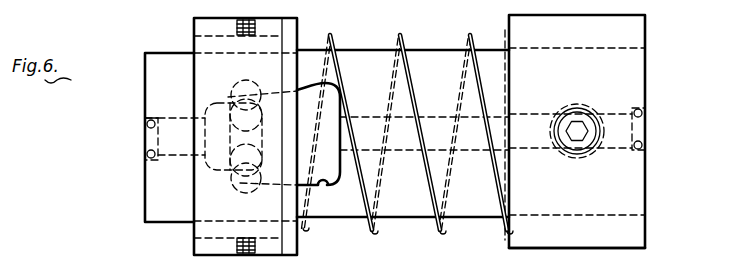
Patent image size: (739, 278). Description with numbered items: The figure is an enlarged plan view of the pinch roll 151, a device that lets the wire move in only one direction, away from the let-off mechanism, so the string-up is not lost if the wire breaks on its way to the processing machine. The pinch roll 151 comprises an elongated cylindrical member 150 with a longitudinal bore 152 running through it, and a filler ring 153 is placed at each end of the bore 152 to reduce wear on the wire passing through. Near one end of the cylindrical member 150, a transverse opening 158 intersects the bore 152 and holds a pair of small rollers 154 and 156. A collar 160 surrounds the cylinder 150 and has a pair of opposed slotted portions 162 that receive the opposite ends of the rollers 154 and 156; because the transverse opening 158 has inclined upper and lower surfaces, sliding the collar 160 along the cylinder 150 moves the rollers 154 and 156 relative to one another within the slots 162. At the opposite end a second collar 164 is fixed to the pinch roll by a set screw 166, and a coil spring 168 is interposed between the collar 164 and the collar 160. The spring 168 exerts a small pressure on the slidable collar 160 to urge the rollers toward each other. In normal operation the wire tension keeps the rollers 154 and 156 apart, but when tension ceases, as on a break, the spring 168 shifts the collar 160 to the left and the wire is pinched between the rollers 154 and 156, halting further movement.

The elongated cylindrical member 150 is at (143, 208).
The pinch roll 151 is at (585, 82).
The longitudinal bore 152 is at (170, 160).
The filler ring 153 is at (145, 134).
The small roller 154 is at (243, 97).
The small roller 156 is at (242, 181).
The transverse opening 158 is at (318, 188).
The collar 160 is at (193, 242).
The slotted portion 162 is at (258, 186).
The second collar 164 is at (568, 249).
The set screw 166 is at (574, 154).
The coil spring 168 is at (330, 34).